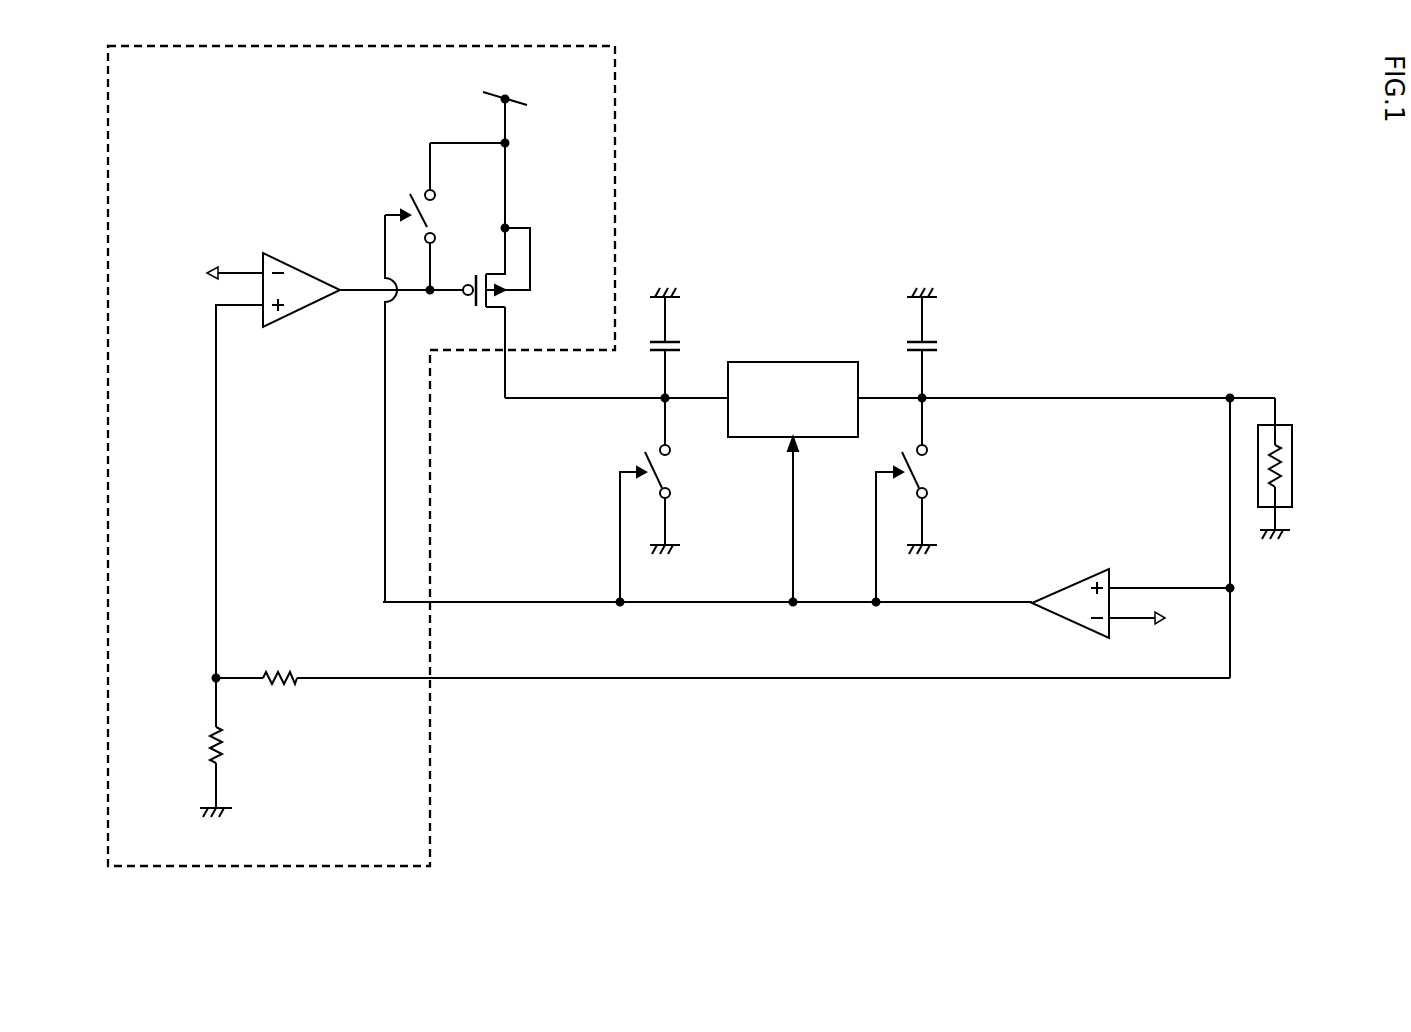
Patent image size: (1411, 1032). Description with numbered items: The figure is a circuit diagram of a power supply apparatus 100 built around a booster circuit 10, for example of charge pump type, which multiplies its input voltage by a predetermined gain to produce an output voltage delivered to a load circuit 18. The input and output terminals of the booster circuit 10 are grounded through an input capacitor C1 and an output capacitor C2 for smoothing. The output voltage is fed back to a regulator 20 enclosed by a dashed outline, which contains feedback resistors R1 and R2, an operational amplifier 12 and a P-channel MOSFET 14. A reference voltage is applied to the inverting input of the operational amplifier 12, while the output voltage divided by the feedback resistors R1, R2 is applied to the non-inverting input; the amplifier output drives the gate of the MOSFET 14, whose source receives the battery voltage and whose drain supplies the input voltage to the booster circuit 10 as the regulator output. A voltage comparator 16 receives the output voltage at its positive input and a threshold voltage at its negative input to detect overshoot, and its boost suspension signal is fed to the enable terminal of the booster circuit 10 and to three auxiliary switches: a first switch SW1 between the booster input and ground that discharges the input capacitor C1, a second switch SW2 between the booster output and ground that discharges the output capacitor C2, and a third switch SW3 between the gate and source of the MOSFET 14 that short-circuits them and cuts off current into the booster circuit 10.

The power supply apparatus 100 is at (740, 488).
The booster circuit 10 is at (795, 362).
The operational amplifier 12 is at (303, 264).
The P-channel MOSFET 14 is at (530, 258).
The voltage comparator 16 is at (1071, 582).
The load circuit 18 is at (1292, 462).
The regulator 20 is at (616, 162).
The first switch SW1 is at (688, 476).
The second switch SW2 is at (945, 476).
The third switch SW3 is at (405, 175).
The input capacitor C1 is at (685, 343).
The output capacitor C2 is at (942, 343).
The feedback resistor R1 is at (230, 747).
The feedback resistor R2 is at (722, 665).